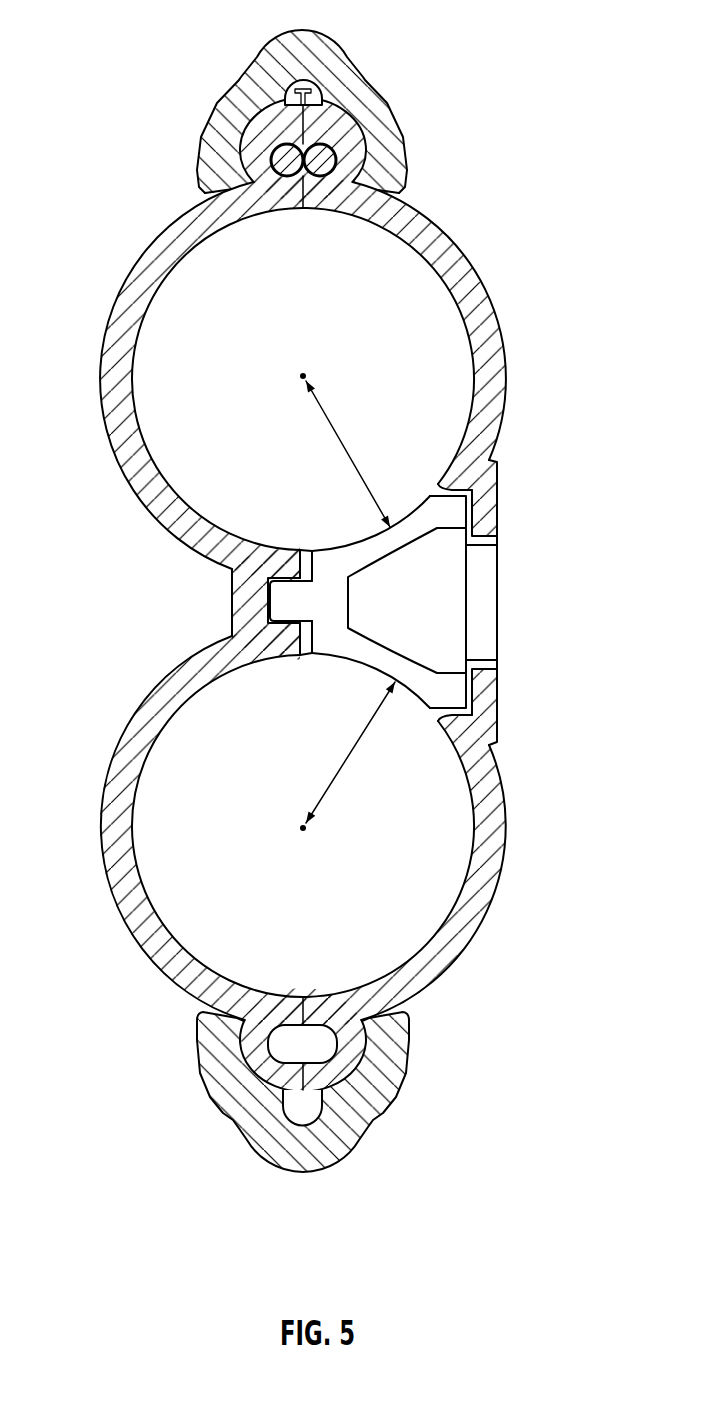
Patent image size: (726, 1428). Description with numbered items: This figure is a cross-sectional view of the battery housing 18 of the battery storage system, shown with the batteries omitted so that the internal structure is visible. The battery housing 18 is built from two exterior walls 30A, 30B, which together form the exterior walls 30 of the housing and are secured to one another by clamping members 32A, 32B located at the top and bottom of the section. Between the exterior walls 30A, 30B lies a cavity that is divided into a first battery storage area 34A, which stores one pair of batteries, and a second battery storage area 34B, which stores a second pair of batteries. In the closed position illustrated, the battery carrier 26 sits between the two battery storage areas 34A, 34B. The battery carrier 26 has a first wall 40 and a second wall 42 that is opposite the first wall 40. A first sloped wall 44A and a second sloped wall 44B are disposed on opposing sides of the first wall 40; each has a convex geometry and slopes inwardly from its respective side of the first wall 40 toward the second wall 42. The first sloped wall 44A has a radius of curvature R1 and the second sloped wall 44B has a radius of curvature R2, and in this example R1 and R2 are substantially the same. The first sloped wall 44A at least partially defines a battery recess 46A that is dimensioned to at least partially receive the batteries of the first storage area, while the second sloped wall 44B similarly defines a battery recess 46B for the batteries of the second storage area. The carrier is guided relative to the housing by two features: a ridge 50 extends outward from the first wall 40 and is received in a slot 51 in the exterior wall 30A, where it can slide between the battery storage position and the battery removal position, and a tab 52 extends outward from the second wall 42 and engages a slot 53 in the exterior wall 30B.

The battery housing 18 is at (307, 611).
The battery carrier 26 is at (418, 615).
The exterior walls 30 is at (307, 602).
The exterior wall 30A is at (291, 375).
The exterior wall 30B is at (335, 657).
The clamping member 32A is at (323, 50).
The clamping member 32B is at (308, 1163).
The first battery storage area 34A is at (205, 369).
The second battery storage area 34B is at (212, 869).
The first wall 40 is at (330, 648).
The second wall 42 is at (447, 510).
The first sloped wall 44A is at (407, 535).
The second sloped wall 44B is at (402, 668).
The battery recess 46A is at (358, 524).
The battery recess 46B is at (349, 689).
The ridge 50 is at (290, 602).
The slot 51 is at (262, 600).
The tab 52 is at (483, 608).
The slot 53 is at (482, 538).
The radius of curvature R1 is at (329, 424).
The radius of curvature R2 is at (328, 790).